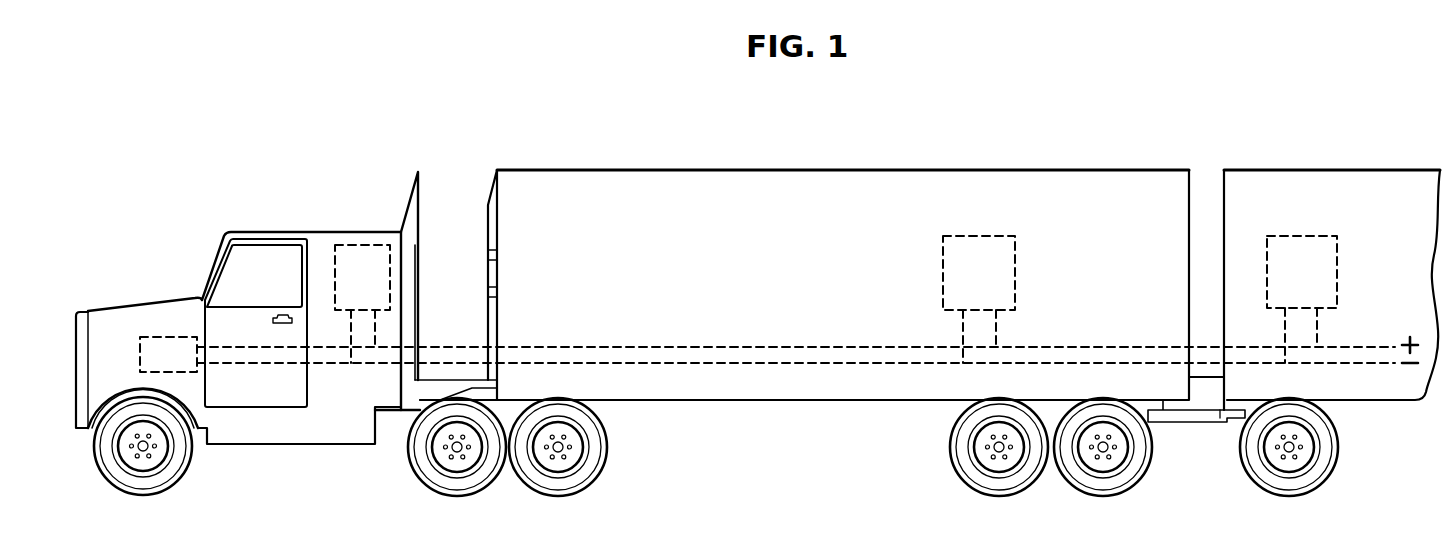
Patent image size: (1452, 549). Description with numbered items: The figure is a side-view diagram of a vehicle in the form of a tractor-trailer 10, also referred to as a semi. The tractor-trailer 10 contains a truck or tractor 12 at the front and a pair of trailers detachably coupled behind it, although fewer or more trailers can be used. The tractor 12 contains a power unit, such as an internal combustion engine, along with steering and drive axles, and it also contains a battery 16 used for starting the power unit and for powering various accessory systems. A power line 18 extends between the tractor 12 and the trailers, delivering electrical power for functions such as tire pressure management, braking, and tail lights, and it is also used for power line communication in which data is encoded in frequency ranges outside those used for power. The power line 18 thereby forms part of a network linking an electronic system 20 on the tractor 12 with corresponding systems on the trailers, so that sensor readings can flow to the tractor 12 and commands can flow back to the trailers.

The tractor-trailer 10 is at (152, 163).
The tractor 12 is at (108, 331).
The battery 16 is at (164, 336).
The power line 18 is at (722, 350).
The electronic system 20 is at (356, 262).